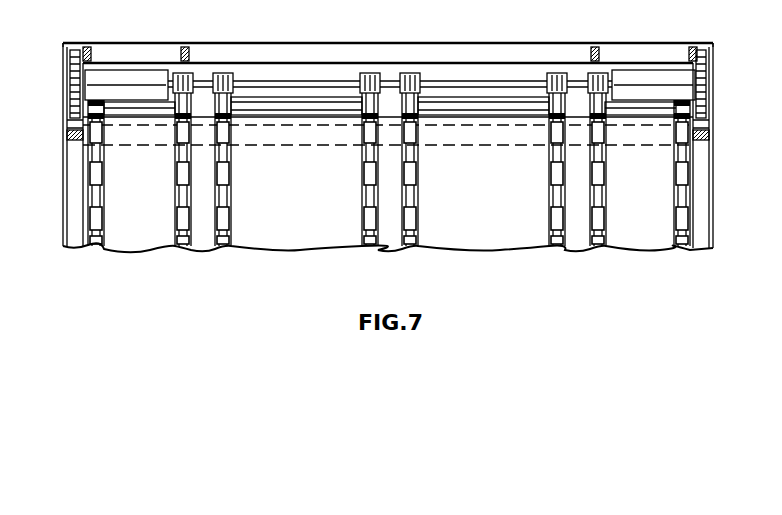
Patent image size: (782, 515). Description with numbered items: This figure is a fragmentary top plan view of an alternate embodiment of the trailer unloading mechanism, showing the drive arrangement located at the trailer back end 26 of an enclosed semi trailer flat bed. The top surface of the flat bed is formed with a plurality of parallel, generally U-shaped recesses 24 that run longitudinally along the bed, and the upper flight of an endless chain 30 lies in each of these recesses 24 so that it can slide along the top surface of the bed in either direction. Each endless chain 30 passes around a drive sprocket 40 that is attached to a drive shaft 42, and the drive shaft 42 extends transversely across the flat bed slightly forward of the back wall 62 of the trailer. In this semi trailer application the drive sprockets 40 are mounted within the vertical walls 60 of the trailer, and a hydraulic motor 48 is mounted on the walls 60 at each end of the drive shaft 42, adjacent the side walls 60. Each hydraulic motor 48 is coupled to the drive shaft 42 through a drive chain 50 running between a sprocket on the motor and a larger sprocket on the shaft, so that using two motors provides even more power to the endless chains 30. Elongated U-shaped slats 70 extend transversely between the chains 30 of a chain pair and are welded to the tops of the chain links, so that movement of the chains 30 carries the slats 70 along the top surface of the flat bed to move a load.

The recesses 24 is at (173, 196).
The trailer back end 26 is at (523, 43).
The endless chain 30 is at (231, 215).
The drive sprocket 40 is at (222, 76).
The drive shaft 42 is at (332, 80).
The hydraulic motor 48 is at (129, 78).
The drive chain 50 is at (78, 48).
The vertical walls 60 is at (67, 178).
The back wall 62 is at (171, 44).
The slats 70 is at (297, 115).